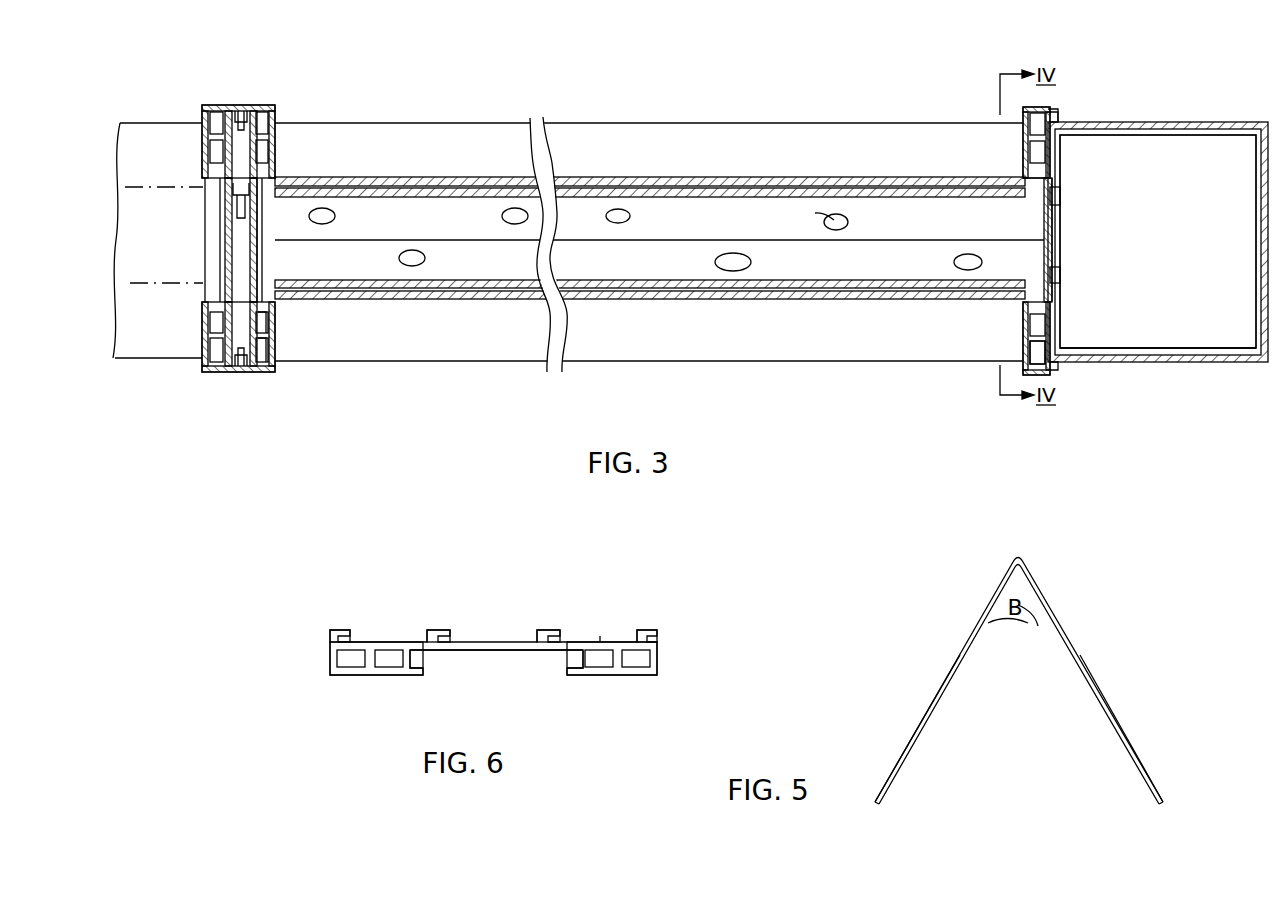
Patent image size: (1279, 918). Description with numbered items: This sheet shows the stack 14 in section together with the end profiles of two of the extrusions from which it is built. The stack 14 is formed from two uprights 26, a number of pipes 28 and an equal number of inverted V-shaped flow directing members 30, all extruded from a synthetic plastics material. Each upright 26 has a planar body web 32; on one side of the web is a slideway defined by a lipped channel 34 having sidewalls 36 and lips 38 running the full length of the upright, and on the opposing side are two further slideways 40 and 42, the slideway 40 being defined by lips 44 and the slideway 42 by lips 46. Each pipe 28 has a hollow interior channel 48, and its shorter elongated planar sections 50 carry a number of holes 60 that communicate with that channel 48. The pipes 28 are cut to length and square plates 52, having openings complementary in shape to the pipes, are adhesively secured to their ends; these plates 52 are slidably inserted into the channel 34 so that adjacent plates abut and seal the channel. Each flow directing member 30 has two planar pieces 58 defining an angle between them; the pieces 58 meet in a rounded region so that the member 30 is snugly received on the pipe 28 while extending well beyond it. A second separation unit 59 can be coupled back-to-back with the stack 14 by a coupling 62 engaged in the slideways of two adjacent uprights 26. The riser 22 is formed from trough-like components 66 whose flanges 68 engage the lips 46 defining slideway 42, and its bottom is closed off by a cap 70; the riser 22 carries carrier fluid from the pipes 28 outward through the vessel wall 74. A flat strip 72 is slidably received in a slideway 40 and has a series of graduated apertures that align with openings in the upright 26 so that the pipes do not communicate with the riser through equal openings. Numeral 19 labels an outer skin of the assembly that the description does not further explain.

In FIG. 3, the stack 14 is at (907, 92).
In FIG. 3, the panel skin 19 is at (425, 143).
In FIG. 3, the riser 22 is at (1195, 120).
In FIG. 3, the upright 26 is at (262, 105).
In FIG. 6, the upright 26 is at (600, 642).
In FIG. 3, the pipe 28 is at (930, 192).
In FIG. 3, the flow directing member 30 is at (811, 133).
In FIG. 5, the flow directing member 30 is at (1050, 570).
In FIG. 6, the planar body web 32 is at (492, 642).
In FIG. 6, the lipped channel 34 is at (524, 668).
In FIG. 6, the sidewall 36 is at (412, 658).
In FIG. 3, the lip 38 is at (1022, 158).
In FIG. 6, the lip 38 is at (413, 672).
In FIG. 6, the slideway 40 is at (465, 624).
In FIG. 6, the slideway 42 is at (630, 626).
In FIG. 3, the lip 44 is at (1058, 196).
In FIG. 6, the lip 44 is at (432, 630).
In FIG. 3, the lip 46 is at (1059, 118).
In FIG. 6, the lip 46 is at (345, 630).
In FIG. 3, the interior channel 48 is at (1053, 238).
In FIG. 3, the elongated planar section 50 is at (838, 228).
In FIG. 3, the square plate 52 is at (262, 328).
In FIG. 5, the planar piece 58 is at (940, 685).
In FIG. 3, the separation unit 59 is at (167, 147).
In FIG. 3, the hole 60 is at (735, 270).
In FIG. 3, the coupling 62 is at (257, 256).
In FIG. 3, the trough-like component 66 is at (1205, 352).
In FIG. 3, the flange 68 is at (1056, 110).
In FIG. 3, the cap 70 is at (1193, 311).
In FIG. 3, the flat strip 72 is at (1054, 266).
In FIG. 3, the vessel wall 74 is at (1062, 240).